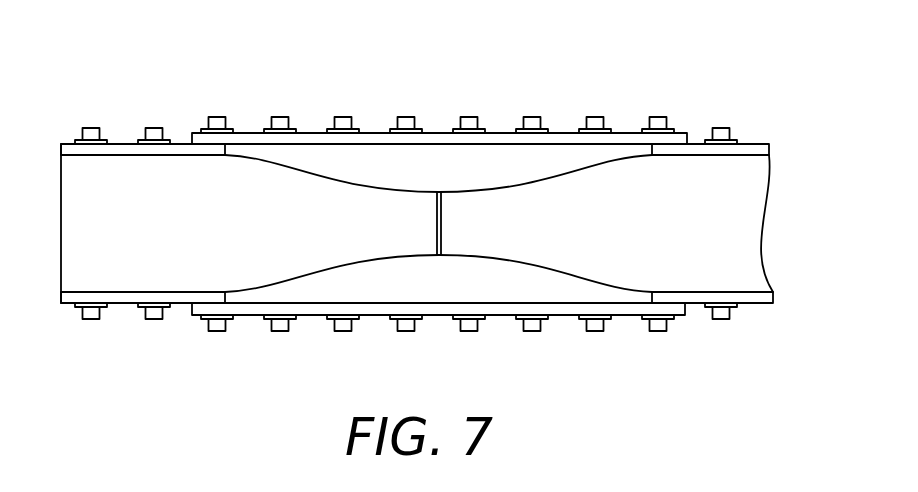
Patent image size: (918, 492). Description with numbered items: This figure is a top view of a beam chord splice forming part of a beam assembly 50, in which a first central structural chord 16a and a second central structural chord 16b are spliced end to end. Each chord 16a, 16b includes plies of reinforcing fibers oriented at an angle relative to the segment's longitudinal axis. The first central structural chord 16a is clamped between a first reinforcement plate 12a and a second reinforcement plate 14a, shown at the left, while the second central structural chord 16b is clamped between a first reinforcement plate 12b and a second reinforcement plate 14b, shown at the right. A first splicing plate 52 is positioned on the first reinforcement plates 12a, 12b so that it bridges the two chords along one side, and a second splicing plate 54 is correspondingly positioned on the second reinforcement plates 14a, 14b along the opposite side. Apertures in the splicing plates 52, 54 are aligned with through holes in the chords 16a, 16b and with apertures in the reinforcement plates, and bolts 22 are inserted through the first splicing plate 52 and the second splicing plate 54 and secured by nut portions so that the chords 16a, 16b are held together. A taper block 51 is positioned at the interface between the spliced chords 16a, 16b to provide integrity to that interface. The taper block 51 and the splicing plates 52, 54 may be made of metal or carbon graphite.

The beam assembly 50 is at (750, 70).
The bolts 22 is at (96, 128).
The second reinforcement plate 14a is at (117, 143).
The second reinforcement plate 14b is at (750, 144).
The first reinforcement plate 12a is at (125, 307).
The first reinforcement plate 12b is at (753, 305).
The first central structural chord 16a is at (205, 238).
The second central structural chord 16b is at (702, 235).
The taper block 51 is at (442, 224).
The first splicing plate 52 is at (440, 317).
The second splicing plate 54 is at (440, 133).